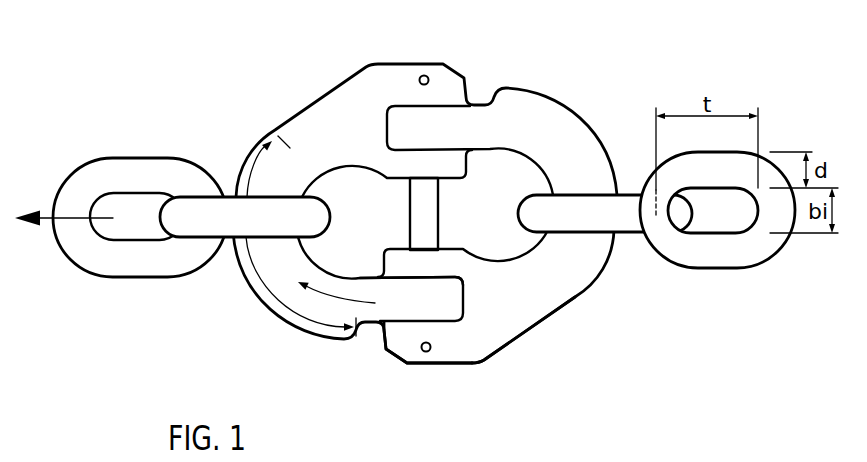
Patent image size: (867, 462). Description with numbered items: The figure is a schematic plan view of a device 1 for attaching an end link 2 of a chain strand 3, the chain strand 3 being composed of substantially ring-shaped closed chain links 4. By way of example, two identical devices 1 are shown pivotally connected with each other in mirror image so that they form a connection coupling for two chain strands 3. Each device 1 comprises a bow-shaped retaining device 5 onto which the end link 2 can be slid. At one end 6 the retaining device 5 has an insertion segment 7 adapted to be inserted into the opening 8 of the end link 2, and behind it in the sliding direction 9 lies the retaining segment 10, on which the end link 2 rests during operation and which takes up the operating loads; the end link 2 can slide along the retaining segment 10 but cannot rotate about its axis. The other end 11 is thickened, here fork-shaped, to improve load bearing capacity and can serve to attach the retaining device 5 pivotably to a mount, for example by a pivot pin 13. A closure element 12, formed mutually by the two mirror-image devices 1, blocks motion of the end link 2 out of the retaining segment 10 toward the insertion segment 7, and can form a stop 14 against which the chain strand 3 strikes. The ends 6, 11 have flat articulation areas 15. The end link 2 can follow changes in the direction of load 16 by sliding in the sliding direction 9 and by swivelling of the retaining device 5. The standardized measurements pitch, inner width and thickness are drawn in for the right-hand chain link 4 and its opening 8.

The device 1 is at (425, 230).
The end link 2 is at (207, 208).
The chain strand 3 is at (392, 244).
The chain link 4 is at (172, 267).
The retaining device 5 is at (314, 350).
The end 6 is at (473, 347).
The insertion segment 7 is at (426, 312).
The opening 8 is at (230, 256).
The sliding direction 9 is at (332, 300).
The retaining segment 10 is at (283, 301).
The other end 11 is at (426, 169).
The closure element 12 is at (423, 337).
The pivot pin 13 is at (437, 211).
The stop 14 is at (368, 352).
The flat articulation areas 15 is at (405, 148).
The direction of load 16 is at (44, 208).